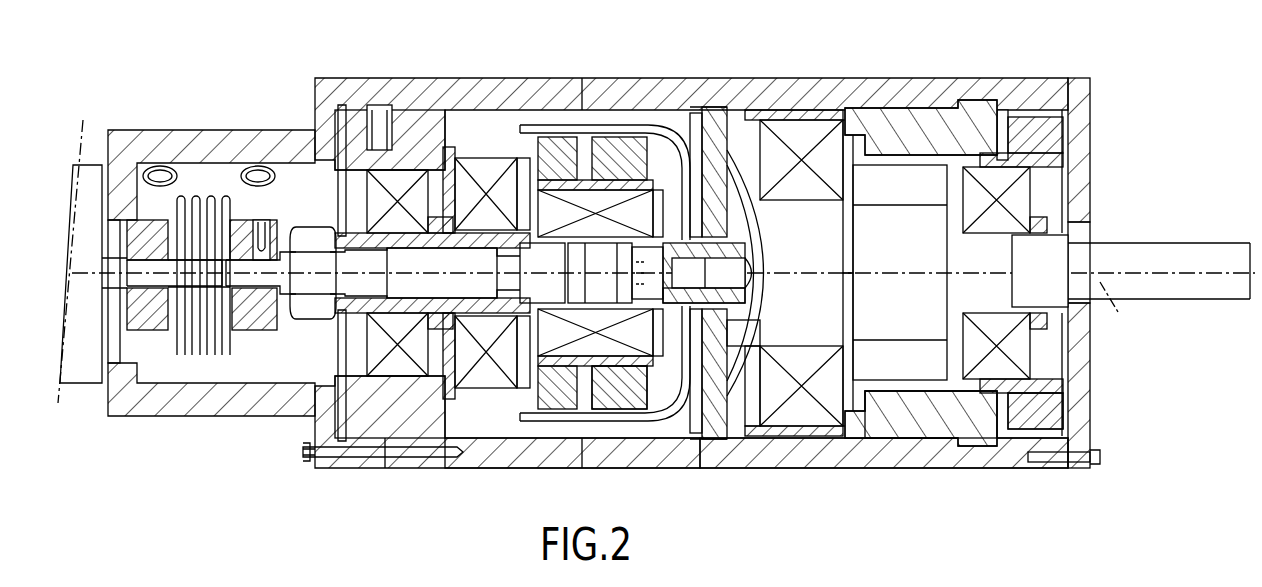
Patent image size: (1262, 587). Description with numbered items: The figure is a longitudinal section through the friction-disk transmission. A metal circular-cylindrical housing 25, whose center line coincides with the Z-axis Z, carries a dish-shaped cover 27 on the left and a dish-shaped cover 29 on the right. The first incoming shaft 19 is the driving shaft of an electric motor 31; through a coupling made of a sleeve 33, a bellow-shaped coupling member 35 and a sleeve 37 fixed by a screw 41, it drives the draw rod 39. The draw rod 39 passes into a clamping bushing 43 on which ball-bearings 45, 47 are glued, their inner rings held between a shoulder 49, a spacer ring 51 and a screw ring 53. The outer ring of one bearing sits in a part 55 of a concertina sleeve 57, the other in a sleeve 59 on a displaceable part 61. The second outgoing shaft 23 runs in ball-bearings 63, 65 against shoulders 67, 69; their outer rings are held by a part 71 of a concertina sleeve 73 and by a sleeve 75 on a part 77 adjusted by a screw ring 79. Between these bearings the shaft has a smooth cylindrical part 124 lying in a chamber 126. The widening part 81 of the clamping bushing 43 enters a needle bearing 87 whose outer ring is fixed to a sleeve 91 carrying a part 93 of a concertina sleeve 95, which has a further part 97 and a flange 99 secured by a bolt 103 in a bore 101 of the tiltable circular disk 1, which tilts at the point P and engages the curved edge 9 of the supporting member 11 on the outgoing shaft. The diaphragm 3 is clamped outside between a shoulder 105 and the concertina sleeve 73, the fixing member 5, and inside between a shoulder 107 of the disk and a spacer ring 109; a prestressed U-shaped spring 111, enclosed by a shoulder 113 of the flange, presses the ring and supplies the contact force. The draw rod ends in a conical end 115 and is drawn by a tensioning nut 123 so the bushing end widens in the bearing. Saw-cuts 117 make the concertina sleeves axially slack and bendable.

The circular disk 1 is at (742, 212).
The diaphragm 3 is at (708, 105).
The annular fixing member 5 is at (698, 435).
The curved edge 9 is at (749, 383).
The supporting member 11 is at (752, 115).
The first incoming shaft 19 is at (135, 267).
The second outgoing shaft 23 is at (1123, 244).
The housing 25 is at (836, 452).
The dish-shaped cover 27 is at (222, 146).
The dish-shaped cover 29 is at (1085, 134).
The electric motor 31 is at (76, 190).
The sleeve 33 is at (150, 235).
The coupling member 35 is at (212, 310).
The sleeve 37 is at (265, 318).
The draw rod 39 is at (232, 300).
The screw 41 is at (261, 228).
The clamping bushing 43 is at (538, 270).
The ball-bearing 45 is at (472, 165).
The ball-bearing 47 is at (398, 172).
The shoulder 49 is at (510, 232).
The spacer ring 51 is at (455, 321).
The screw ring 53 is at (340, 352).
The part 55 is at (470, 440).
The concertina sleeve 57 is at (450, 125).
The sleeve 59 is at (438, 400).
The part 61 is at (360, 455).
The ball-bearing 63 is at (795, 125).
The ball-bearing 65 is at (1010, 180).
The shoulder 67 is at (760, 344).
The shoulder 69 is at (957, 310).
The part 71 is at (882, 452).
The concertina sleeve 73 is at (930, 430).
The sleeve 75 is at (1000, 125).
The part 77 is at (1048, 410).
The screw ring 79 is at (1045, 330).
The widening part 81 is at (640, 300).
The needle bearing 87 is at (530, 206).
The sleeve 91 is at (556, 145).
The part 93 is at (556, 400).
The concertina sleeve 95 is at (636, 150).
The part 97 is at (615, 400).
The flange 99 is at (640, 345).
The bore 101 is at (740, 262).
The bolt 103 is at (650, 242).
The shoulder 105 is at (694, 128).
The shoulder 107 is at (740, 232).
The spacer ring 109 is at (740, 300).
The U-shaped spring 111 is at (618, 140).
The shoulder 113 is at (612, 298).
The conical end 115 is at (662, 320).
The saw-cuts 117 is at (378, 112).
The tensioning nut 123 is at (312, 226).
The smooth cylindrical part 124 is at (868, 226).
The chamber 126 is at (912, 150).
The tilting point P is at (764, 296).
The Z-axis Z is at (603, 310).